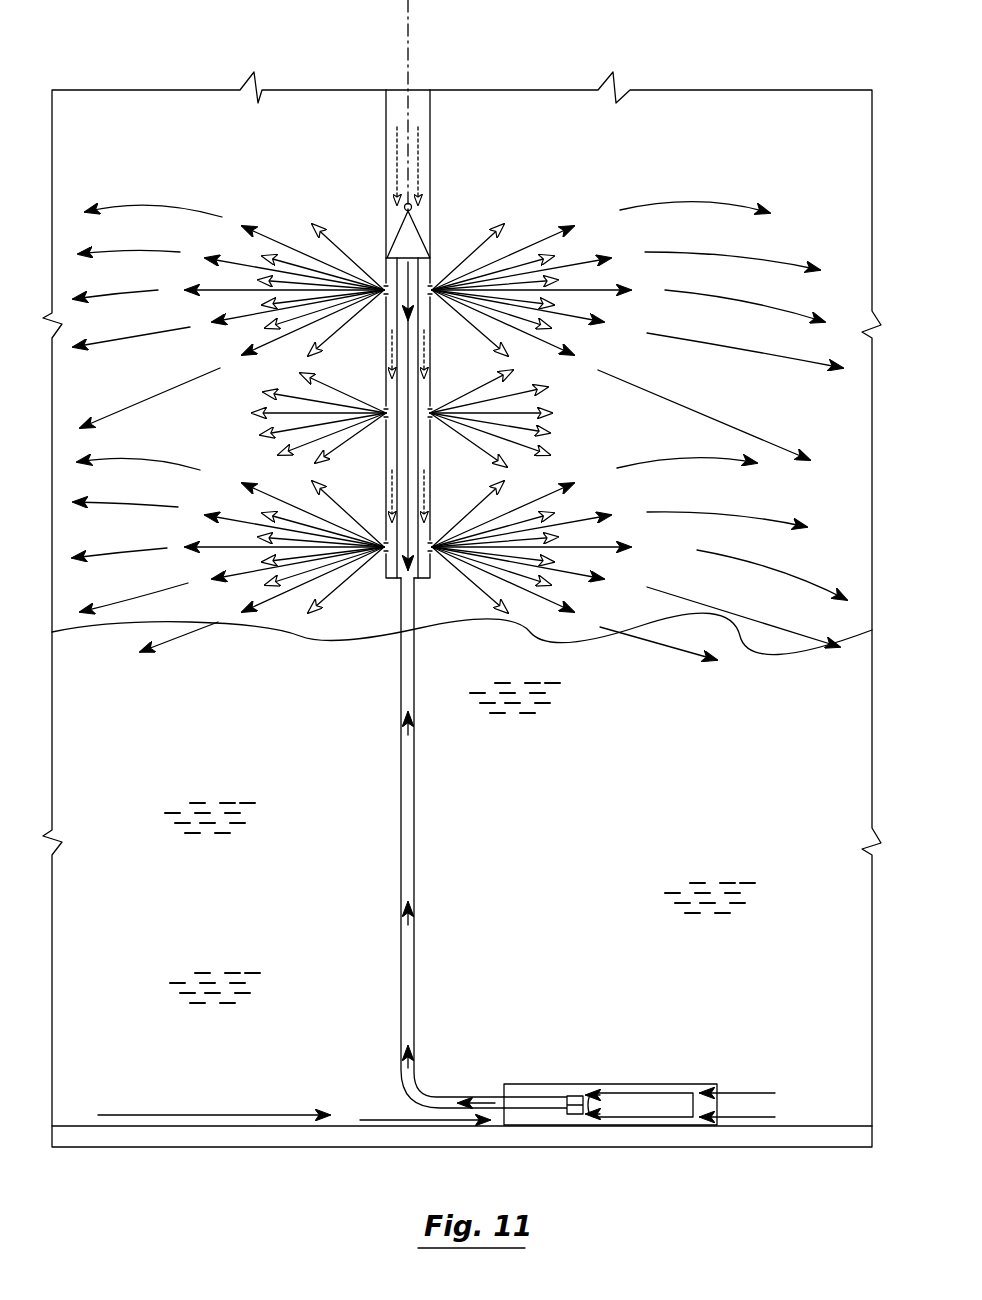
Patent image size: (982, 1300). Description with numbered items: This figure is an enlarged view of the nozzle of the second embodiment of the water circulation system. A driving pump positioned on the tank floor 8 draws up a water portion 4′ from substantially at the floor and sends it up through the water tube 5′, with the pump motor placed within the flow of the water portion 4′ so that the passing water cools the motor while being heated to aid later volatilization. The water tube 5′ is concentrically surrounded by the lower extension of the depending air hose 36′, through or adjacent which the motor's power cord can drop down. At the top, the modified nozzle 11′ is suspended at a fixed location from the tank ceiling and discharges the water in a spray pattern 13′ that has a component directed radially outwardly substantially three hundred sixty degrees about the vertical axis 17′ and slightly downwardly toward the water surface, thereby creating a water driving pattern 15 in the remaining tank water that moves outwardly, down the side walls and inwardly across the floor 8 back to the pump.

The vertical axis 17′ is at (409, 14).
The air hose 36′ is at (434, 162).
The spray pattern 13′ is at (118, 292).
The nozzle 11′ is at (432, 367).
The water tube 5′ is at (399, 812).
The water portion 4′ is at (410, 952).
The driving pattern 15 is at (214, 1112).
The tank floor 8 is at (830, 1125).